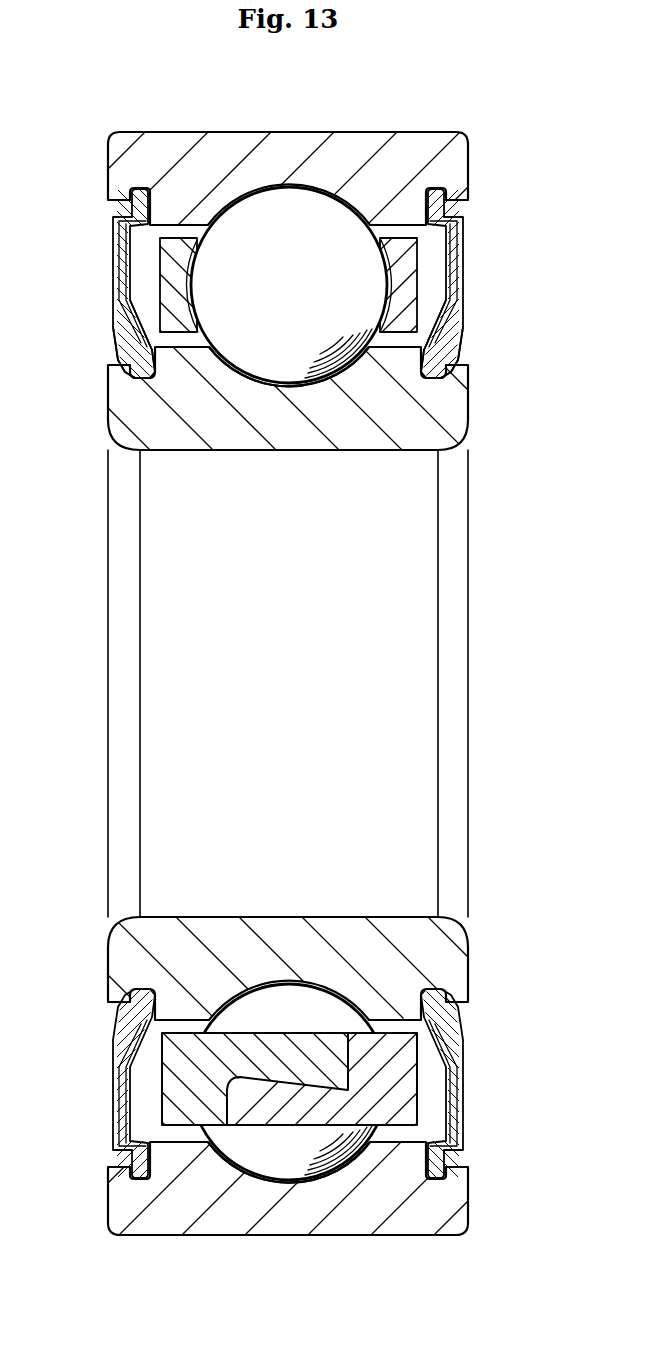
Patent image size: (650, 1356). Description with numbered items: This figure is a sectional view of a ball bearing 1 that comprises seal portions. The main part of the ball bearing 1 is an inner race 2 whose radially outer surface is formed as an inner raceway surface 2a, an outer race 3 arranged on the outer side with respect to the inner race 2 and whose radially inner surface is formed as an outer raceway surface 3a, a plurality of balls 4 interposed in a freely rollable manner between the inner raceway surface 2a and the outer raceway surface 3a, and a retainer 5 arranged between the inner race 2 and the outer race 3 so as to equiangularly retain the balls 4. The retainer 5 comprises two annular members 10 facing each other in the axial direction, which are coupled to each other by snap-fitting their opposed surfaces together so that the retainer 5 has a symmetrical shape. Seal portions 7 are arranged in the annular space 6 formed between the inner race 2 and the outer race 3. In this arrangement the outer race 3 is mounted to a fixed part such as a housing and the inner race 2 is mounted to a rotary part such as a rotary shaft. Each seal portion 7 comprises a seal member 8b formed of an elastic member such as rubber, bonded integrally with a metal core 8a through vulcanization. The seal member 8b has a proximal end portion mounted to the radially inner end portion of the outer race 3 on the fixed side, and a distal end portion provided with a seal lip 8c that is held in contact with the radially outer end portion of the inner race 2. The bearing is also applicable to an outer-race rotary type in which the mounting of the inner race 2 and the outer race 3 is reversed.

The ball bearing 1 is at (490, 942).
The inner race 2 is at (288, 683).
The inner raceway surface 2a is at (258, 364).
The outer race 3 is at (289, 705).
The outer raceway surface 3a is at (258, 1157).
The ball 4 is at (302, 203).
The retainer 5 is at (237, 1025).
The annular space 6 is at (169, 294).
The seal portion 7 is at (454, 343).
The metal core 8a is at (443, 283).
The seal member 8b is at (120, 296).
The seal lip 8c is at (130, 377).
The annular member 10 is at (175, 1095).